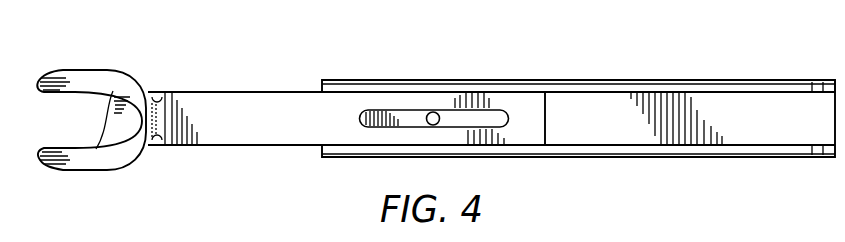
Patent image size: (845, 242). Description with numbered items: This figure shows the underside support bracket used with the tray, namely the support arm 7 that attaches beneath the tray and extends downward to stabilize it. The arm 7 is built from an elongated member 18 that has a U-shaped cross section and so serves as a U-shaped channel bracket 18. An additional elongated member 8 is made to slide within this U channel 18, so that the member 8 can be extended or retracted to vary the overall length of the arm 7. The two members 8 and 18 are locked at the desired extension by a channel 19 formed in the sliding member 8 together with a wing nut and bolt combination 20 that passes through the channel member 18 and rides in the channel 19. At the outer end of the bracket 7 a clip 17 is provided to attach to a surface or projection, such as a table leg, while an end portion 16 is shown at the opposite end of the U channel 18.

The support arm 7 is at (207, 92).
The elongated member 8 is at (243, 133).
The end tab 16 is at (813, 80).
The clip 17 is at (88, 70).
The elongated member 18 is at (557, 81).
The channel 19 is at (362, 113).
The wing nut and bolt combination 20 is at (428, 112).